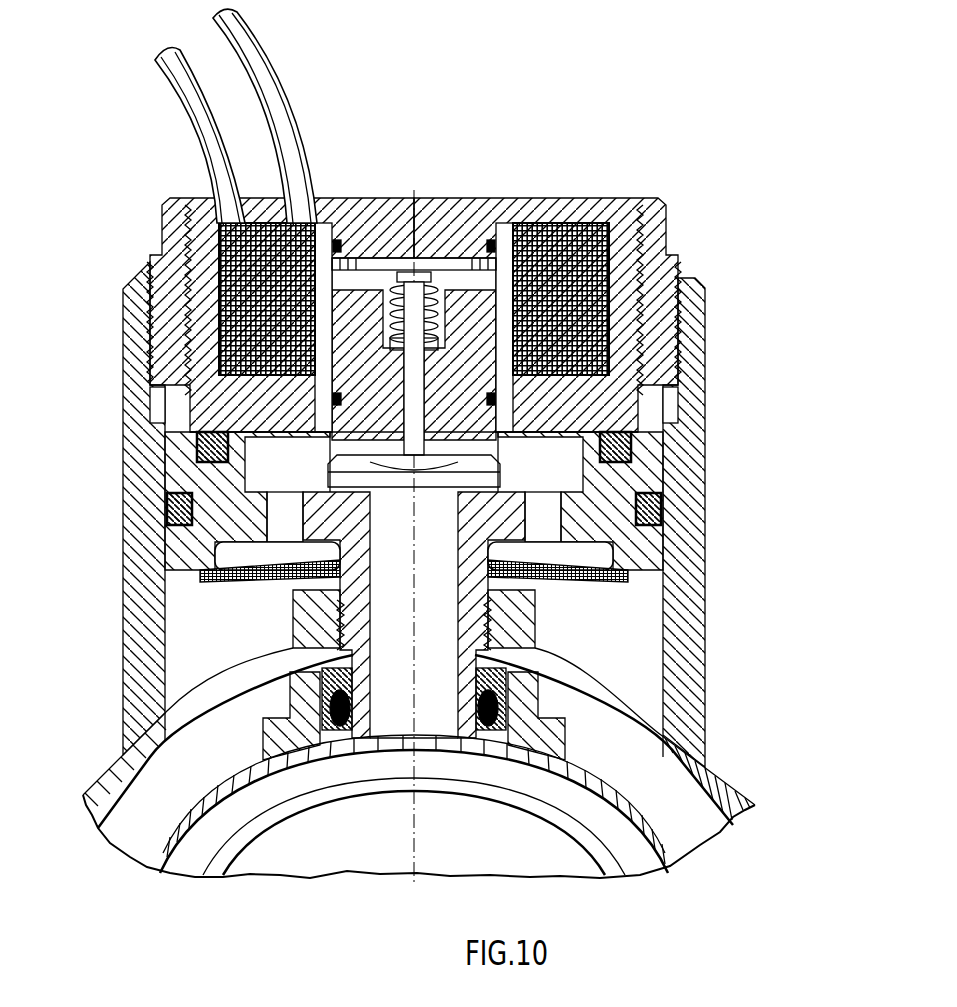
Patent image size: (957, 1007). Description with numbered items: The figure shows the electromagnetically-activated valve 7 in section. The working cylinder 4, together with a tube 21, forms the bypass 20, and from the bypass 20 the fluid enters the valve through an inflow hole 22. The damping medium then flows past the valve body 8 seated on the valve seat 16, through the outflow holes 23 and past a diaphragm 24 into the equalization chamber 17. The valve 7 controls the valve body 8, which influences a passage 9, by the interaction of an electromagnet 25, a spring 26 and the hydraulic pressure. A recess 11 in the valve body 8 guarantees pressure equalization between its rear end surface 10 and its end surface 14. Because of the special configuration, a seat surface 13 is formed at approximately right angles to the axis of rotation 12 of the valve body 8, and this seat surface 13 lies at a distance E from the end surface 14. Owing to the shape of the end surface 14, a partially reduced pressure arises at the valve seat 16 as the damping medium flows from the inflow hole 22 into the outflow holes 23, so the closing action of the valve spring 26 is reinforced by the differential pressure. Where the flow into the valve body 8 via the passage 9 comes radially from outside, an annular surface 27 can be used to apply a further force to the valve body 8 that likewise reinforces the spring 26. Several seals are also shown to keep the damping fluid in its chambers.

The working cylinder 4 is at (577, 822).
The valve 7 is at (719, 289).
The valve body 8 is at (517, 323).
The passage 9 is at (302, 470).
The rear end surface 10 is at (352, 283).
The recess 11 is at (330, 424).
The axis of rotation 12 is at (418, 543).
The seat surface 13 is at (498, 470).
The end surface 14 is at (470, 462).
The valve seat 16 is at (653, 497).
The equalization chamber 17 is at (593, 738).
The bypass 20 is at (557, 788).
The tube 21 is at (512, 752).
The inflow hole 22 is at (286, 578).
The outflow holes 23 is at (553, 520).
The diaphragm 24 is at (560, 578).
The electromagnet 25 is at (567, 300).
The spring 26 is at (453, 280).
The annular surface 27 is at (330, 455).
The distance E is at (373, 462).